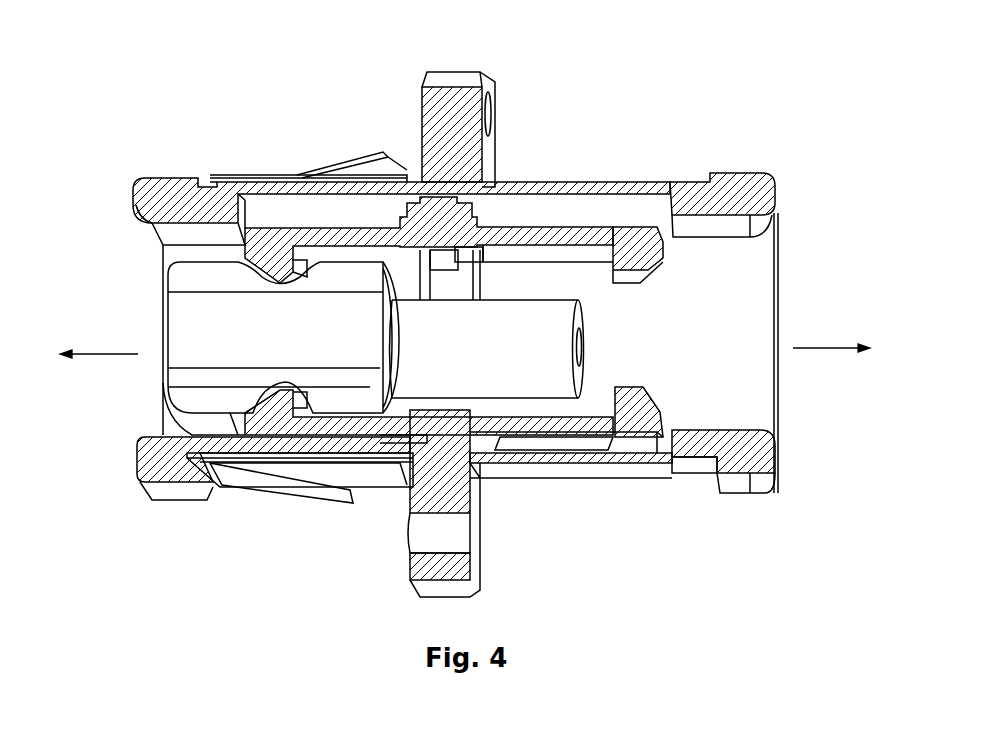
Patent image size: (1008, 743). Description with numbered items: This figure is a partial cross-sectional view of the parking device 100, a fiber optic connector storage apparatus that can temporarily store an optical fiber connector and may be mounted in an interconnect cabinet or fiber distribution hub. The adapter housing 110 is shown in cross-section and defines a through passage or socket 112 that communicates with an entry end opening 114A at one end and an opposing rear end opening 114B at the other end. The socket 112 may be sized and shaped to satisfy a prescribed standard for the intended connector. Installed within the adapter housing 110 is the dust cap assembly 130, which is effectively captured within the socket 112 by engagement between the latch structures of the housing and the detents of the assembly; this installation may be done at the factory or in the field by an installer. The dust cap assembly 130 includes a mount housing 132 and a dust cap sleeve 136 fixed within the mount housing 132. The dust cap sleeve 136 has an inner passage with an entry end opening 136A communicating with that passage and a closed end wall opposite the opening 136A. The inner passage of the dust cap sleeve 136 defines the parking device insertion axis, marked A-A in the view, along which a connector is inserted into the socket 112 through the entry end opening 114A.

The parking device 100 is at (166, 82).
The adapter housing 110 is at (630, 466).
The socket 112 is at (690, 324).
The entry end opening 114A is at (793, 415).
The rear end opening 114B is at (140, 383).
The dust cap assembly 130 is at (224, 270).
The mount housing 132 is at (198, 303).
The dust cap sleeve 136 is at (534, 257).
The entry end opening 136A is at (582, 350).